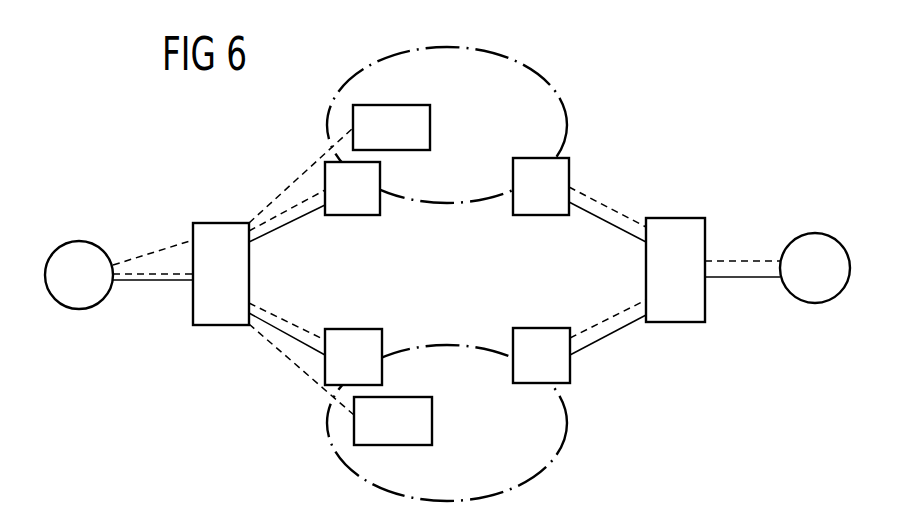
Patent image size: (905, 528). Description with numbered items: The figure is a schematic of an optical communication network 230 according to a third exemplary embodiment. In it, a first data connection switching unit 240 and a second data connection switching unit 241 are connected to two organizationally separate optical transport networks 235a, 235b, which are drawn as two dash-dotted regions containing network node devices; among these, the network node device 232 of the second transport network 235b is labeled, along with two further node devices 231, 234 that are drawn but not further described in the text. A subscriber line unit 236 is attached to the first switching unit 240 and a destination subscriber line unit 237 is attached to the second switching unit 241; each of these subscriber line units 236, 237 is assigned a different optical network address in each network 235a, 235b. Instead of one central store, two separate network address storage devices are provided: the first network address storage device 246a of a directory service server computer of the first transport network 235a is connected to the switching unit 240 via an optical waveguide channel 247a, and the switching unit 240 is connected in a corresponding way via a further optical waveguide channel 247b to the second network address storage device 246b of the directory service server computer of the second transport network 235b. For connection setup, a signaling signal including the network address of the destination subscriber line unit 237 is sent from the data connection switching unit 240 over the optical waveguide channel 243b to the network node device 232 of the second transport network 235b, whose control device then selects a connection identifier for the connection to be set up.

The optical communication network 230 is at (180, 406).
The network node N1 231 is at (368, 216).
The network node device 232 is at (347, 328).
The network node N4 234 is at (533, 328).
The first optical transport network 235a is at (598, 85).
The second optical transport network 235b is at (578, 450).
The subscriber line unit 236 is at (78, 310).
The destination subscriber line unit 237 is at (818, 304).
The first data connection switching unit 240 is at (222, 326).
The second data connection switching unit 241 is at (676, 323).
The optical waveguide channel 243b is at (273, 312).
The first network address storage device 246a is at (430, 125).
The second network address storage device 246b is at (432, 425).
The optical waveguide channel 247a is at (278, 192).
The further optical waveguide channel 247b is at (287, 360).